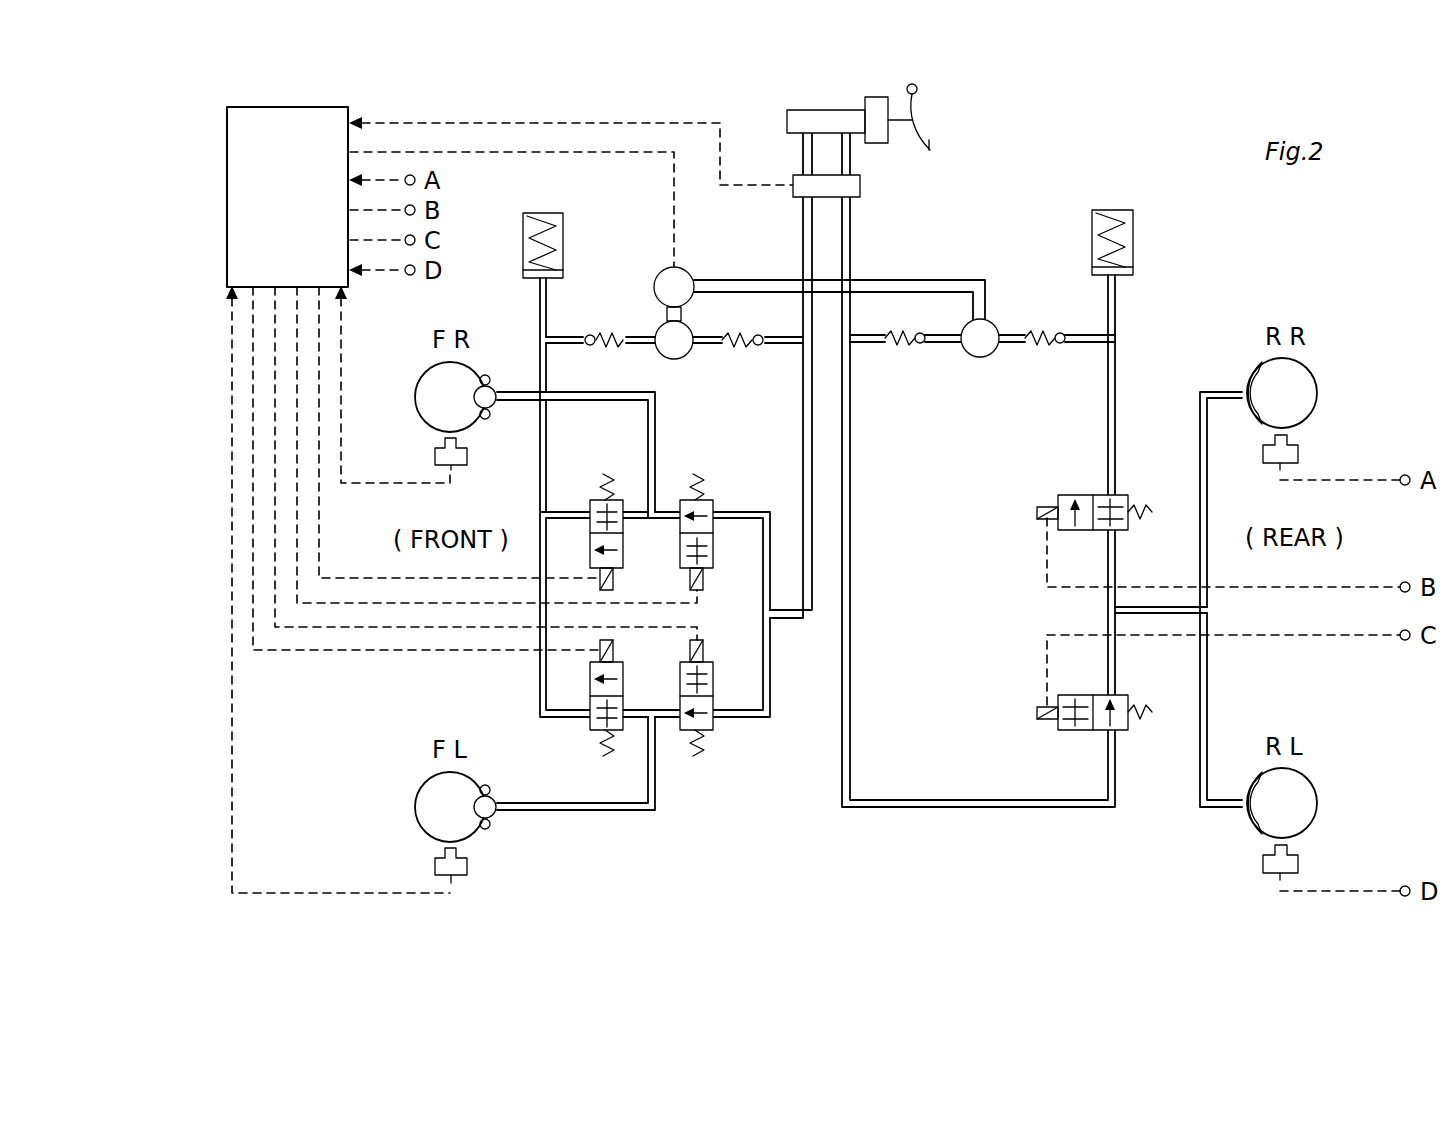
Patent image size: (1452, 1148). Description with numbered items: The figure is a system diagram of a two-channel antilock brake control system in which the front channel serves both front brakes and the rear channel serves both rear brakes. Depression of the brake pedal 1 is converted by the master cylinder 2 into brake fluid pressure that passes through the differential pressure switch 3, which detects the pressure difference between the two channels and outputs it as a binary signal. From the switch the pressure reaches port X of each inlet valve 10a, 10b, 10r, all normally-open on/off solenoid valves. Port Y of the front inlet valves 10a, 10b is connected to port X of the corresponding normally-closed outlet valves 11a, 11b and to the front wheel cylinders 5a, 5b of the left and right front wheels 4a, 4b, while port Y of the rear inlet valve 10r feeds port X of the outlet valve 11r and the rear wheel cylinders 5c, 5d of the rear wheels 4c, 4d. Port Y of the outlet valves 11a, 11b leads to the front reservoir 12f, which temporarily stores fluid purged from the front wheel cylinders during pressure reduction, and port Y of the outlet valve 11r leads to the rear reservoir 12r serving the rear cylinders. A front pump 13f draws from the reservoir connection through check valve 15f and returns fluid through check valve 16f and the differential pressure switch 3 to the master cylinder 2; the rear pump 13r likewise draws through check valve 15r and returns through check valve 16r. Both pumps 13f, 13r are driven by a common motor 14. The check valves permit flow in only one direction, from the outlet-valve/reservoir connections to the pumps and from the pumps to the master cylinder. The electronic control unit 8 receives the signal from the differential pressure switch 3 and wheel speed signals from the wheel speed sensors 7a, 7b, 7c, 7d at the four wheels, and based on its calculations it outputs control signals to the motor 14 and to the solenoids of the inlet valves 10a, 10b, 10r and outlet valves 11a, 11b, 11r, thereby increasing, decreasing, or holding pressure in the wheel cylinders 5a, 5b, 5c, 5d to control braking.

The brake pedal 1 is at (915, 120).
The master cylinder 2 is at (820, 110).
The differential pressure switch 3 is at (860, 185).
The left front wheel 4a is at (420, 807).
The right front wheel 4b is at (420, 397).
The left rear wheel 4c is at (1306, 802).
The right rear wheel 4d is at (1306, 392).
The wheel cylinder 5a is at (490, 830).
The wheel cylinder 5b is at (490, 420).
The wheel cylinder 5c is at (1247, 818).
The wheel cylinder 5d is at (1247, 379).
The wheel speed sensor 7a is at (435, 867).
The wheel speed sensor 7b is at (435, 457).
The wheel speed sensor 7c is at (1298, 863).
The wheel speed sensor 7d is at (1298, 453).
The electronic control unit 8 is at (287, 197).
The inlet valve 10a is at (713, 696).
The inlet valve 10b is at (713, 550).
The inlet valve 10r is at (1069, 730).
The outlet valve 11a is at (623, 696).
The outlet valve 11b is at (623, 550).
The outlet valve 11r is at (1068, 495).
The front reservoir 12f is at (563, 240).
The rear reservoir 12r is at (1133, 237).
The front pump 13f is at (674, 360).
The rear pump 13r is at (982, 358).
The motor 14 is at (689, 273).
The check valve 15f is at (602, 332).
The check valve 15r is at (1039, 329).
The check valve 16f is at (746, 354).
The check valve 16r is at (897, 346).